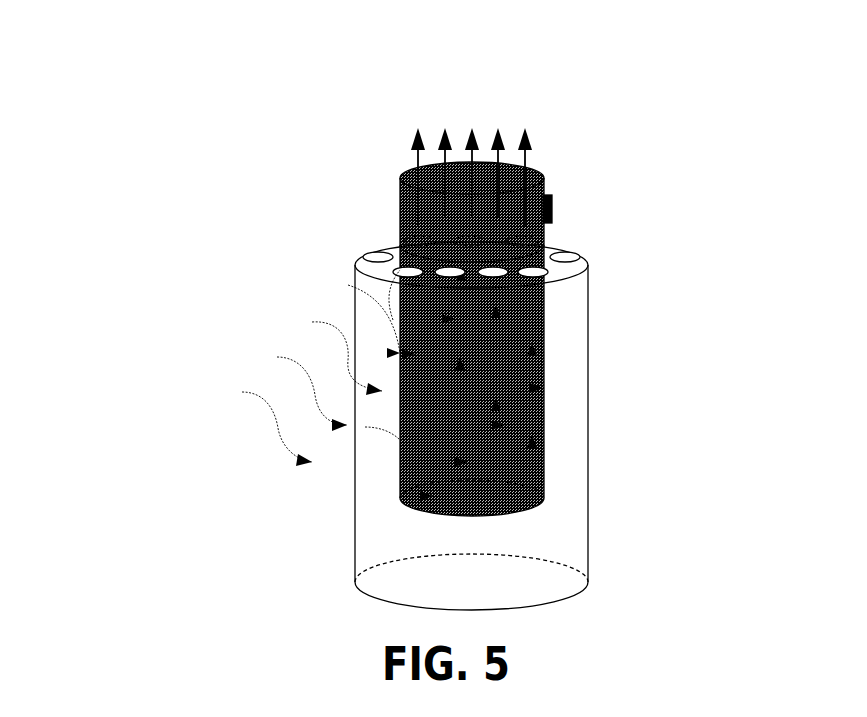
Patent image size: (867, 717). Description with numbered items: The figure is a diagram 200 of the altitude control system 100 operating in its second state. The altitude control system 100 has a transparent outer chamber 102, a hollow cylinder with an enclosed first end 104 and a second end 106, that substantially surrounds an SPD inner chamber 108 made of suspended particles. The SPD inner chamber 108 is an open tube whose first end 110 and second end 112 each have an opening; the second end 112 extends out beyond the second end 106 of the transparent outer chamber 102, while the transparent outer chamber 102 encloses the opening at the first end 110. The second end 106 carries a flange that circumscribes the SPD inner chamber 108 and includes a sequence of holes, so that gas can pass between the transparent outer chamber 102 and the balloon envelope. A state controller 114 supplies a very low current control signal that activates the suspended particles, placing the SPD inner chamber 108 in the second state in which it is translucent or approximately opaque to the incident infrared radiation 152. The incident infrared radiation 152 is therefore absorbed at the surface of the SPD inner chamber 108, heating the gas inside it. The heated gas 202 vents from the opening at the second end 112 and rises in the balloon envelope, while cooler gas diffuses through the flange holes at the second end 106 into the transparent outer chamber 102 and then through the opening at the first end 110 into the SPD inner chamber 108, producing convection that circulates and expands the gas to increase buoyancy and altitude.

The diagram 200 is at (178, 105).
The altitude control system 100 is at (363, 143).
The transparent outer chamber 102 is at (588, 378).
The first end 104 is at (390, 613).
The second end 106 is at (578, 237).
The SPD inner chamber 108 is at (400, 218).
The first end 110 is at (465, 488).
The second end 112 is at (537, 162).
The state controller 114 is at (553, 200).
The incident infrared radiation 152 is at (268, 470).
The heated gas 202 is at (508, 117).